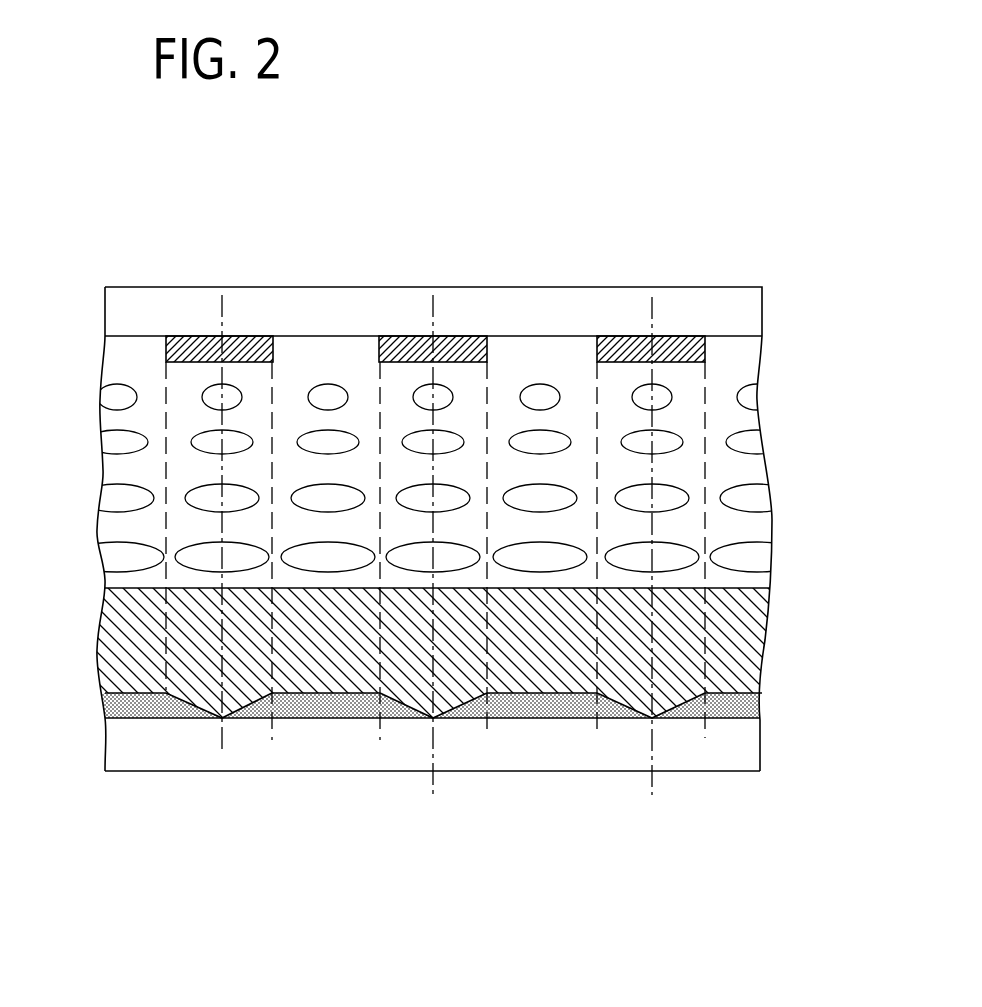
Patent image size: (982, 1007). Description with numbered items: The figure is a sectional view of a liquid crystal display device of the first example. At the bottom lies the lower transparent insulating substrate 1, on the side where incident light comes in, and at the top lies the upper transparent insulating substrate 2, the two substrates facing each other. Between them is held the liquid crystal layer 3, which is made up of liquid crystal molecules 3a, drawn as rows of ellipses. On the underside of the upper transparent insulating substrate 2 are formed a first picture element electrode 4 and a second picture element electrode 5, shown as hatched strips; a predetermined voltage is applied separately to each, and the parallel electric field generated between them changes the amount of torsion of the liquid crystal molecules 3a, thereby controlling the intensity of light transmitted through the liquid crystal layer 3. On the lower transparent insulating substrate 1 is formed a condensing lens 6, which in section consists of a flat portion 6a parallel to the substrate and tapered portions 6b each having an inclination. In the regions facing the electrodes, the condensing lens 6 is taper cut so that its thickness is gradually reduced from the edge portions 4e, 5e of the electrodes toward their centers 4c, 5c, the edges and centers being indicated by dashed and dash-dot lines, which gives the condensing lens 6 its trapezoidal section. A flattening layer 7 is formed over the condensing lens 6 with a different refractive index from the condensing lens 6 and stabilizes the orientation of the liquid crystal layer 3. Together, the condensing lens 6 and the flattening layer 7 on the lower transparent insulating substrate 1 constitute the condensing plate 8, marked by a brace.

The lower transparent insulating substrate 1 is at (520, 762).
The upper transparent insulating substrate 2 is at (598, 303).
The liquid crystal layer 3 is at (68, 345).
The liquid crystal molecule 3a is at (437, 478).
The first picture element electrode 4 is at (240, 337).
The center of the first picture element electrode 4c is at (222, 337).
The edge portion of the first picture element electrode 4e is at (166, 346).
The second picture element electrode 5 is at (462, 337).
The center of the second picture element electrode 5c is at (433, 338).
The edge portion of the second picture element electrode 5e is at (380, 338).
The condensing lens 6 is at (332, 705).
The flat portion 6a is at (296, 703).
The tapered portion 6b is at (253, 713).
The flattening layer 7 is at (745, 640).
The condensing plate 8 is at (68, 577).